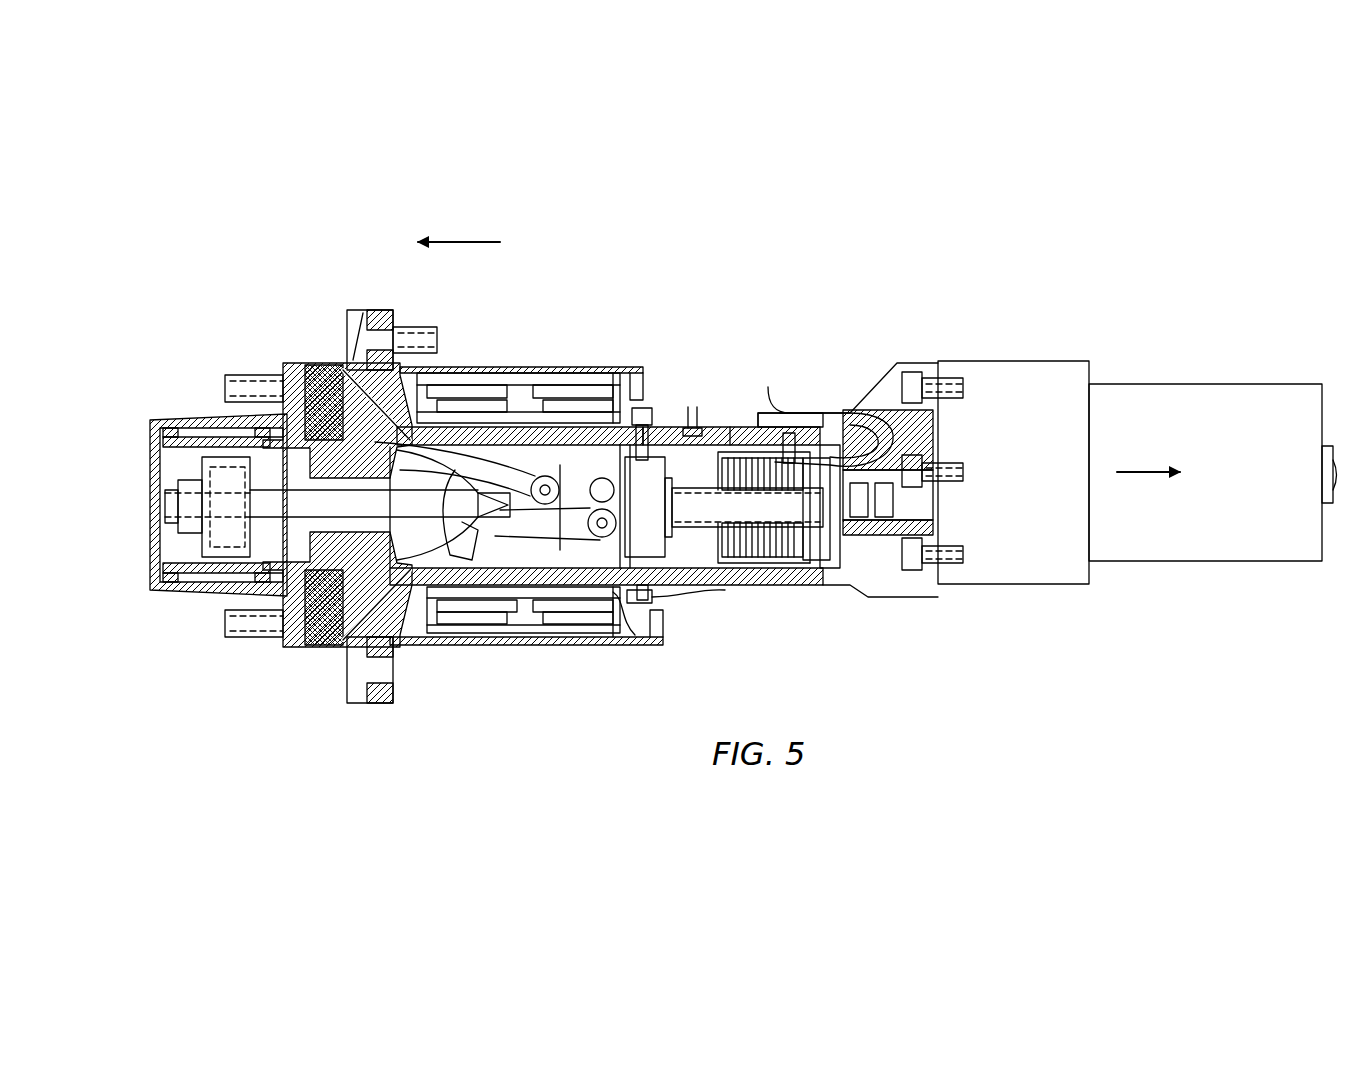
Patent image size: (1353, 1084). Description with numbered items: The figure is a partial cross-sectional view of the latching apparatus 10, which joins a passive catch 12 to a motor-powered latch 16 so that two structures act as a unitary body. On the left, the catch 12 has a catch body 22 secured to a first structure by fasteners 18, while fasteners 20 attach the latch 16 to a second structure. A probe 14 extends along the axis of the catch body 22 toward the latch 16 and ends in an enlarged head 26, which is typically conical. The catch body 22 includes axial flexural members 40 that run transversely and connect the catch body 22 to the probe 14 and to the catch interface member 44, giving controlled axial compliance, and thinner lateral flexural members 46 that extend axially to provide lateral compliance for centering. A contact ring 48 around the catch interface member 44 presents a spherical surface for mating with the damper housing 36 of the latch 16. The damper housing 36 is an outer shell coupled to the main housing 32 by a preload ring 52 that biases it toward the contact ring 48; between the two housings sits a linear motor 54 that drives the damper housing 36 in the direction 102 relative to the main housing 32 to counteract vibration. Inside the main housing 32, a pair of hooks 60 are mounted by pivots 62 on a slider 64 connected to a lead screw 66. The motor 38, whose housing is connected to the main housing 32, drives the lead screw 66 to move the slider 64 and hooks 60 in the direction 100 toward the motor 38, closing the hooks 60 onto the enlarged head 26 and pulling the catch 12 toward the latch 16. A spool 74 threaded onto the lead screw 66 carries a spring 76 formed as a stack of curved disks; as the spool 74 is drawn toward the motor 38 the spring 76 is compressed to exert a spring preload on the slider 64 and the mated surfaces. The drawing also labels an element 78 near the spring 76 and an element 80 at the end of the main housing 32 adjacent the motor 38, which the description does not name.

The latching apparatus 10 is at (862, 233).
The catch 12 is at (146, 322).
The probe 14 is at (418, 518).
The latch 16 is at (1126, 293).
The fasteners 18 is at (257, 373).
The fasteners 20 is at (416, 328).
The catch body 22 is at (185, 416).
The enlarged head 26 is at (492, 508).
The main housing 32 is at (716, 430).
The damper housing 36 is at (472, 366).
The motor 38 is at (1050, 552).
The axial flexural members 40 is at (150, 458).
The catch interface member 44 is at (353, 607).
The lateral flexural members 46 is at (238, 597).
The contact ring 48 is at (325, 370).
The preload ring 52 is at (616, 404).
The linear motor 54 is at (561, 305).
The hooks 60 is at (495, 557).
The pivots 62 is at (598, 536).
The slider 64 is at (748, 443).
The lead screw 66 is at (688, 525).
The spool 74 is at (805, 487).
The spring 76 is at (745, 533).
The coil 78 is at (733, 478).
The mounting flange 80 is at (1032, 361).
The direction 100 is at (1138, 470).
The opposite direction 102 is at (472, 242).